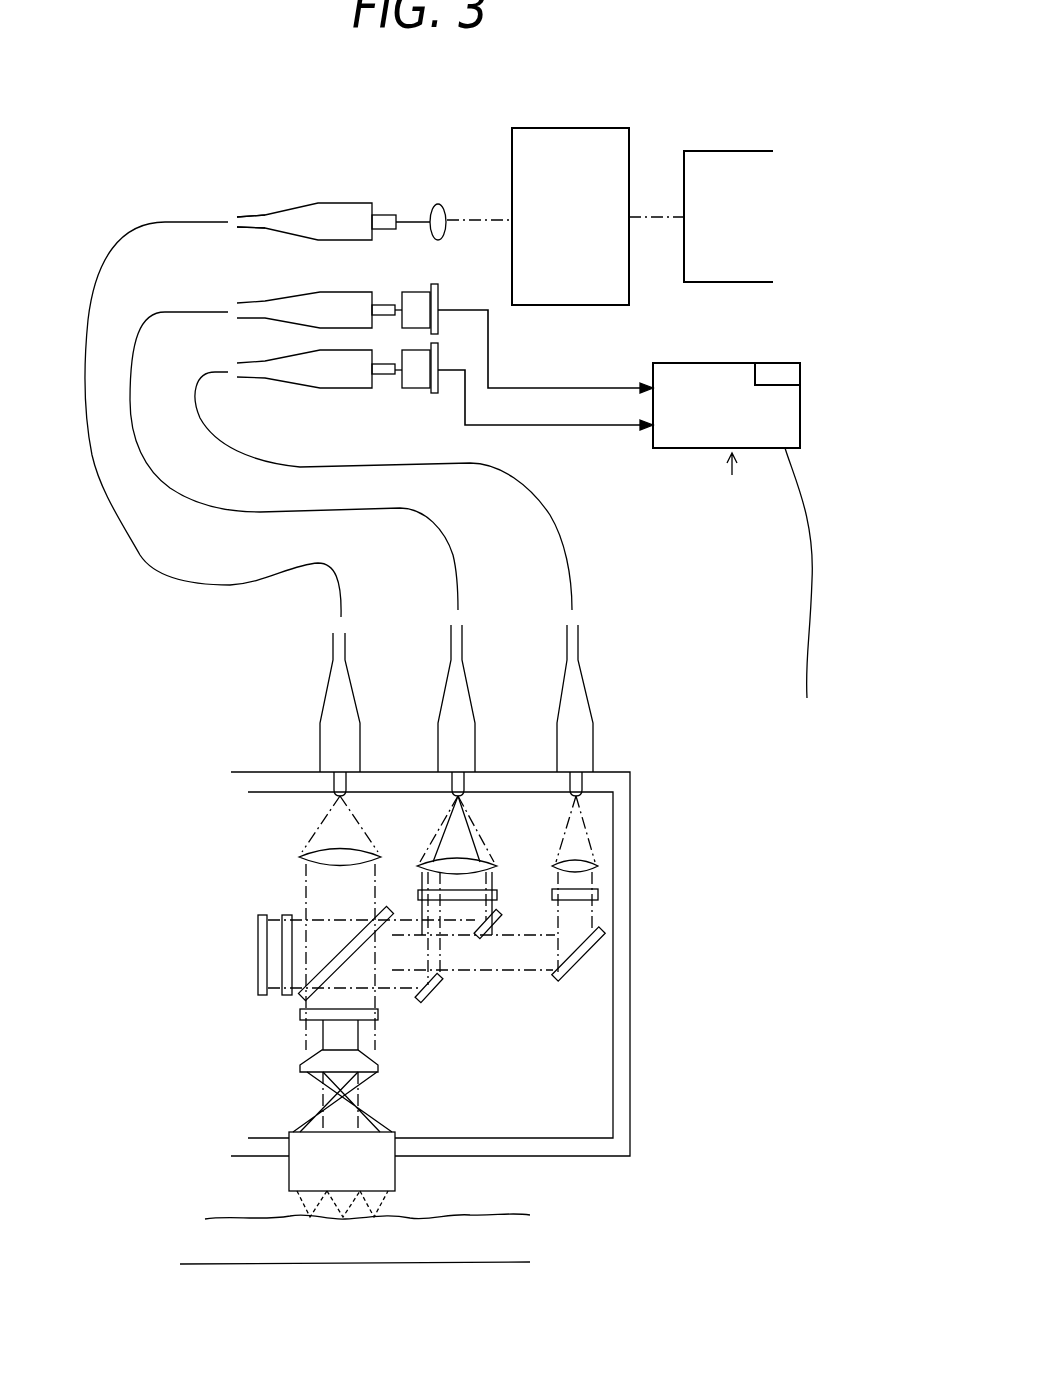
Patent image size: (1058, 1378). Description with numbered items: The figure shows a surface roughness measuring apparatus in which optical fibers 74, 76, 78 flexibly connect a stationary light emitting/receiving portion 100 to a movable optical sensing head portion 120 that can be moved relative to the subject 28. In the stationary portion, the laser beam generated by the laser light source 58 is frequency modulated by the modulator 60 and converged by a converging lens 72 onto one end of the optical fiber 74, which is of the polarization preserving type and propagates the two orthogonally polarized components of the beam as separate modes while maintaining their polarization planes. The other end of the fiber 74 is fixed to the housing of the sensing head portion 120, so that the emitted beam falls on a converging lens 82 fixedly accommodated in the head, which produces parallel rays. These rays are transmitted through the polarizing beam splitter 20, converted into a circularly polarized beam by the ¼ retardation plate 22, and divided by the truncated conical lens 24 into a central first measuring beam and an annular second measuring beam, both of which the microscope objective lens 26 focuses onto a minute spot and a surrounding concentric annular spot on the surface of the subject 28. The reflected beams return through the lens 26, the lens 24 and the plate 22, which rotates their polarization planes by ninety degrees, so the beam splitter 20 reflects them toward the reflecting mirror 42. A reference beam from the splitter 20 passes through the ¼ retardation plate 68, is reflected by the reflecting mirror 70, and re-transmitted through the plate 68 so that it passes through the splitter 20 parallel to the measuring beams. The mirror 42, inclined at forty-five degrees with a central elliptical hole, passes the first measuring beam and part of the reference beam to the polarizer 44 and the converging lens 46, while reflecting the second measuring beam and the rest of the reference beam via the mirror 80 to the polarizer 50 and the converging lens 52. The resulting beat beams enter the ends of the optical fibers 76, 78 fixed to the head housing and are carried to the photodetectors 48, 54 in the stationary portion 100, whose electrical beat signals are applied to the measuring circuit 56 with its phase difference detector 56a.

The polarizing beam splitter 20 is at (305, 997).
The ¼ retardation plate 22 is at (380, 1015).
The truncated conical lens 24 is at (378, 1068).
The microscope objective lens 26 is at (395, 1165).
The subject 28 is at (345, 1263).
The reflecting mirror 42 is at (436, 1000).
The polarizer 44 is at (598, 897).
The converging lens 46 is at (598, 866).
The photodetector 48 is at (418, 390).
The polarizer 50 is at (497, 895).
The converging lens 52 is at (486, 864).
The photodetector 54 is at (442, 297).
The measuring circuit 56 is at (780, 565).
The phase difference detector 56a is at (800, 373).
The laser light source 58 is at (738, 282).
The modulator 60 is at (570, 128).
The ¼ retardation plate 68 is at (287, 915).
The reflecting mirror 70 is at (258, 958).
The converging lens 72 is at (440, 204).
The optical fiber 74 is at (340, 203).
The optical fiber 76 is at (290, 380).
The optical fiber 78 is at (288, 297).
The mirror 80 is at (586, 975).
The converging lens 82 is at (310, 853).
The stationary light emitting/receiving portion 100 is at (661, 494).
The movable optical sensing head portion 120 is at (632, 965).